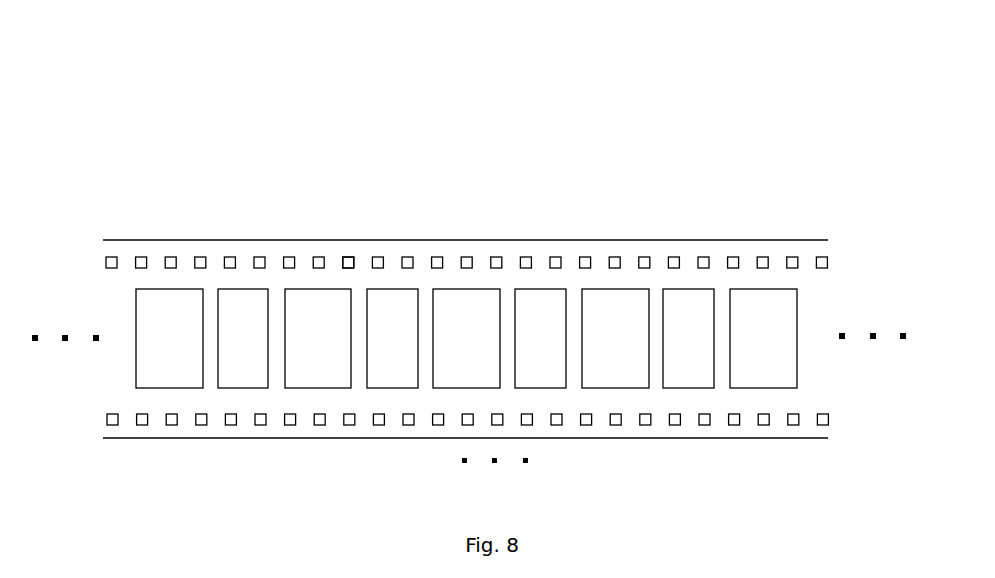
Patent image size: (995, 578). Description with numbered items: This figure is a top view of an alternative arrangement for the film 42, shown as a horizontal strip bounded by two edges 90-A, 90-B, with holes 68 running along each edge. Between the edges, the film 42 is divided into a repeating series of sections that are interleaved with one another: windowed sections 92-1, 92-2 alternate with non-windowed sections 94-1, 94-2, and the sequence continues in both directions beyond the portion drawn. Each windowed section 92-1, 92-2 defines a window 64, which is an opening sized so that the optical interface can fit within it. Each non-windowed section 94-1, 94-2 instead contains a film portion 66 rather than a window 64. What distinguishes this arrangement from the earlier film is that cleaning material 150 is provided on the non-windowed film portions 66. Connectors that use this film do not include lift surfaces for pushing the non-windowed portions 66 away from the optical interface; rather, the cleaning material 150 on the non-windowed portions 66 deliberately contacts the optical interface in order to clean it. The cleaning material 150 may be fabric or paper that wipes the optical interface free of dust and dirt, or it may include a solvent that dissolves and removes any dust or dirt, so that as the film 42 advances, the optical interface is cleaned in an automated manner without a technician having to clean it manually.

The film 42 is at (178, 84).
The window 64 is at (170, 296).
The film portion 66 is at (243, 294).
The holes 68 is at (352, 255).
The edge 90-A is at (567, 240).
The edge 90-B is at (645, 438).
The windowed section 92-1 is at (145, 453).
The non-windowed section 94-1 is at (219, 453).
The windowed section 92-2 is at (293, 453).
The non-windowed section 94-2 is at (367, 453).
The cleaning material 150 is at (245, 342).